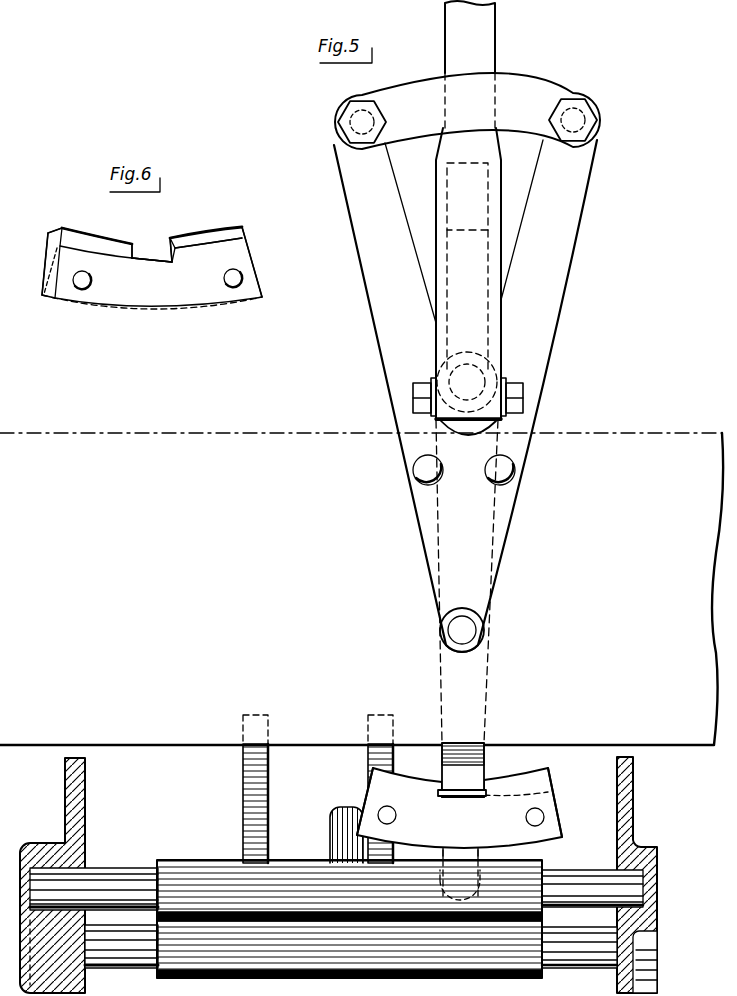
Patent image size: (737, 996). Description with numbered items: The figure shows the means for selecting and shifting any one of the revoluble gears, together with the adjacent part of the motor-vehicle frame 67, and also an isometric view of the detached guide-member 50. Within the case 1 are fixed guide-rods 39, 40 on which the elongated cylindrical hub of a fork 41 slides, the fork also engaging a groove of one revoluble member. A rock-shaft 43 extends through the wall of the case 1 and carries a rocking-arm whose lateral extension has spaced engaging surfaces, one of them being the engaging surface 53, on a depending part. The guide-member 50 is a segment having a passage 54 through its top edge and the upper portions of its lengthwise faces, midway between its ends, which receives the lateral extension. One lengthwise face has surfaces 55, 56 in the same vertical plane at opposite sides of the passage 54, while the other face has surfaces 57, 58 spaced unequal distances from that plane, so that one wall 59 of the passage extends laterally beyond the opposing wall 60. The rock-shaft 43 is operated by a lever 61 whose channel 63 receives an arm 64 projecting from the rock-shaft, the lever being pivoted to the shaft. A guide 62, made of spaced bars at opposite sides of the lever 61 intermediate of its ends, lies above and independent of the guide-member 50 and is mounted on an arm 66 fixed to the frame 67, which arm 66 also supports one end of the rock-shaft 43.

In FIG. 5, the case 1 is at (68, 800).
In FIG. 5, the guide-rod 39 is at (563, 872).
In FIG. 5, the guide-rod 40 is at (130, 958).
In FIG. 5, the fork 41 is at (300, 872).
In FIG. 5, the rock-shaft 43 is at (444, 463).
In FIG. 5, the guide-member 50 is at (525, 805).
In FIG. 6, the guide-member 50 is at (120, 300).
In FIG. 5, the engaging surface 53 is at (470, 781).
In FIG. 6, the passage 54 is at (152, 246).
In FIG. 5, the surface 55 is at (530, 785).
In FIG. 6, the surface 55 is at (62, 226).
In FIG. 5, the surface 56 is at (375, 786).
In FIG. 6, the surface 56 is at (214, 232).
In FIG. 6, the surface 57 is at (72, 244).
In FIG. 6, the surface 58 is at (232, 244).
In FIG. 5, the wall of passage 59 is at (448, 800).
In FIG. 6, the wall of passage 59 is at (174, 258).
In FIG. 5, the wall of passage 60 is at (476, 798).
In FIG. 6, the wall of passage 60 is at (133, 242).
In FIG. 5, the lever 61 is at (488, 52).
In FIG. 5, the guide 62 is at (545, 92).
In FIG. 5, the channel 63 is at (480, 190).
In FIG. 5, the arm 64 is at (473, 258).
In FIG. 5, the arm 66 is at (540, 345).
In FIG. 5, the frame 67 is at (660, 418).